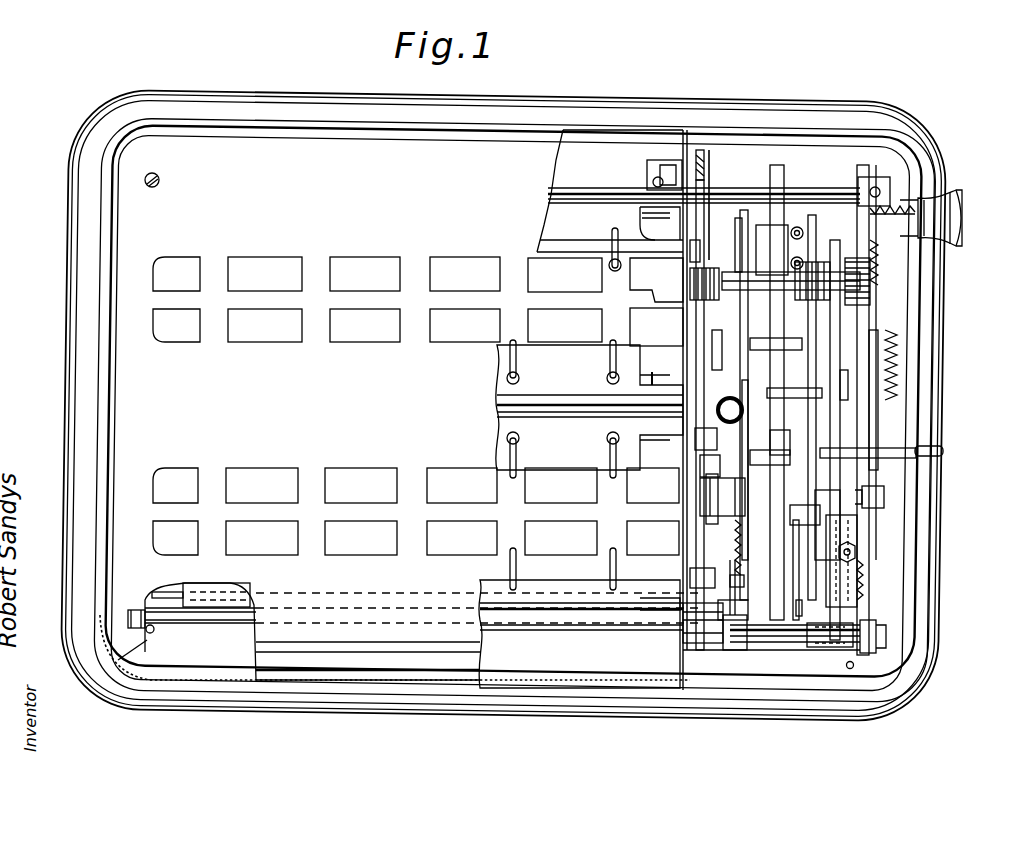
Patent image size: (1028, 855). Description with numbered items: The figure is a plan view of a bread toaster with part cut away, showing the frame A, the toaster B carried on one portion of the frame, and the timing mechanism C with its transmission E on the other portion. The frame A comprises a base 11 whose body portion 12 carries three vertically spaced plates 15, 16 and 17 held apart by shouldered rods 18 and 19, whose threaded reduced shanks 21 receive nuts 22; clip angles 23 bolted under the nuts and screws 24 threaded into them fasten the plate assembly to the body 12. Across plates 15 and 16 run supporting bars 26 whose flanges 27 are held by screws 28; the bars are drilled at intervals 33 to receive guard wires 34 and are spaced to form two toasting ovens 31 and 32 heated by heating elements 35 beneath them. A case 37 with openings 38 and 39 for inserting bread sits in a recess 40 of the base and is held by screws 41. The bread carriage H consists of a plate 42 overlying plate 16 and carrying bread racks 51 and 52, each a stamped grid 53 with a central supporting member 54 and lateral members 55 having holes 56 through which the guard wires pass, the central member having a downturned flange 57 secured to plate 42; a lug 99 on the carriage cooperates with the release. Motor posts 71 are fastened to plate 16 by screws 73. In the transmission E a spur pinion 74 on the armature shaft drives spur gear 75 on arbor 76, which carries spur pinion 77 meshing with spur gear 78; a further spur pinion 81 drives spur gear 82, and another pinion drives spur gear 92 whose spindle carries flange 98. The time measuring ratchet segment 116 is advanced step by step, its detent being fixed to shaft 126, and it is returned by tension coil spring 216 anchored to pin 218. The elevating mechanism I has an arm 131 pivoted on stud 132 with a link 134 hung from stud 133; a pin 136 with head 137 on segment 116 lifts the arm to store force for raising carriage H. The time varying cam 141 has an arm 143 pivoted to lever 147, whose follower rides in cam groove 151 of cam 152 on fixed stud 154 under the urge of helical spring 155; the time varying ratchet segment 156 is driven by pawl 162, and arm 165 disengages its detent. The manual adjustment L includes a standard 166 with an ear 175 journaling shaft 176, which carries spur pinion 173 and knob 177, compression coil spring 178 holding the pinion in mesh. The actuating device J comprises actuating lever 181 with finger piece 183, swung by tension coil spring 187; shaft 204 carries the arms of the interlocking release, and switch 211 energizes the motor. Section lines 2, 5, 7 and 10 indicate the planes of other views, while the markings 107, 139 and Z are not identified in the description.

The machine 10 is at (880, 92).
The base 11 is at (186, 690).
The body portion 12 is at (526, 672).
The plate 15 is at (148, 634).
The plate 16 is at (655, 605).
The plate 17 is at (862, 612).
The shouldered rod 18 is at (790, 195).
The shouldered rod 19 is at (567, 408).
The threaded reduced shank 21 is at (880, 640).
The nut 22 is at (873, 645).
The clip angle 23 is at (660, 650).
The screw 24 is at (640, 652).
The supporting bar 26 is at (558, 563).
The flange 27 is at (682, 532).
The screw 28 is at (682, 520).
The toasting oven 31 is at (358, 530).
The toasting oven 32 is at (458, 262).
The drilled holes 33 is at (612, 582).
The guard wire 34 is at (608, 555).
The heating element 35 is at (648, 603).
The case 37 is at (110, 262).
The opening 38 is at (275, 556).
The opening 39 is at (268, 256).
The recess 40 is at (156, 672).
The screw 41 is at (160, 178).
The plate 42 is at (692, 477).
The bread rack 51 is at (364, 500).
The bread rack 52 is at (365, 300).
The grid 53 is at (254, 506).
The centrally extending supporting member 54 is at (170, 503).
The laterally disposed member 55 is at (308, 470).
The hole 56 is at (510, 548).
The flange 57 is at (658, 512).
The post 71 is at (707, 150).
The screw 73 is at (650, 160).
The spur pinion 74 is at (702, 273).
The spur gear 75 is at (698, 250).
The arbor 76 is at (856, 270).
The spur pinion 77 is at (822, 277).
The spur gear 78 is at (824, 218).
The spur pinion 81 is at (735, 275).
The spur gear 82 is at (736, 232).
The spur gear 92 is at (852, 233).
The flange 98 is at (720, 396).
The lug 99 is at (702, 435).
The bracket 107 is at (692, 574).
The time measuring ratchet segment 116 is at (745, 427).
The shaft 126 is at (718, 357).
The arm 131 is at (728, 496).
The stud 132 is at (742, 645).
The stud 133 is at (740, 615).
The link 134 is at (742, 543).
The pin 136 is at (775, 458).
The head 137 is at (738, 450).
The block 139 is at (705, 465).
The cam 141 is at (785, 350).
The arm 143 is at (760, 316).
The lever 147 is at (845, 572).
The cam groove 151 is at (799, 583).
The cam 152 is at (810, 503).
The fixed stud 154 is at (884, 500).
The helical spring 155 is at (808, 648).
The time varying ratchet segment 156 is at (878, 455).
The pawl 162 is at (845, 316).
The arm 165 is at (835, 395).
The standard 166 is at (786, 210).
The spur pinion 173 is at (770, 205).
The ear 175 is at (772, 165).
The shaft 176 is at (924, 214).
The knob 177 is at (972, 202).
The compression coil spring 178 is at (924, 228).
The actuating lever 181 is at (878, 427).
The finger piece 183 is at (940, 435).
The tension coil spring 187 is at (900, 380).
The shaft 204 is at (845, 383).
The switch 211 is at (848, 582).
The tension coil spring 216 is at (745, 557).
The pin 218 is at (771, 642).
The frame A is at (135, 665).
The toaster B is at (356, 256).
The timing mechanism C is at (802, 614).
The transmission E is at (820, 225).
The carriage H is at (686, 337).
The elevating mechanism I is at (724, 628).
The actuating device J is at (950, 443).
The manual adjustment L is at (968, 216).
The mark Z is at (792, 220).
The section 2 is at (836, 748).
The section 5 is at (745, 748).
The section 7 is at (967, 290).